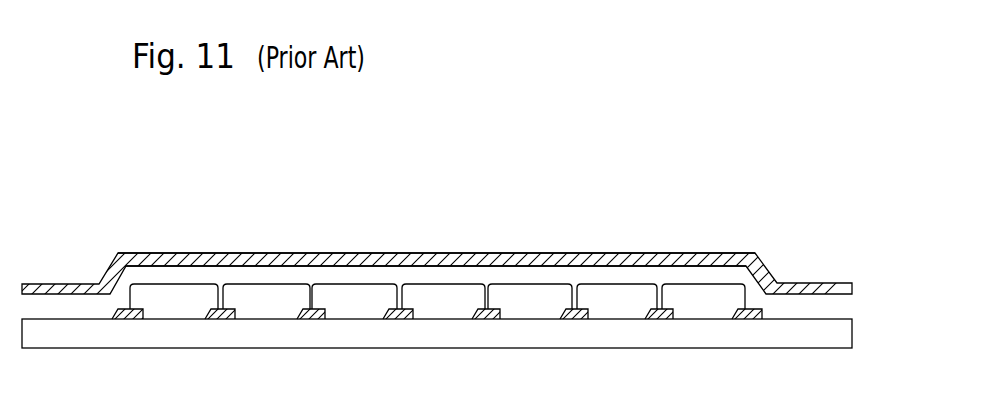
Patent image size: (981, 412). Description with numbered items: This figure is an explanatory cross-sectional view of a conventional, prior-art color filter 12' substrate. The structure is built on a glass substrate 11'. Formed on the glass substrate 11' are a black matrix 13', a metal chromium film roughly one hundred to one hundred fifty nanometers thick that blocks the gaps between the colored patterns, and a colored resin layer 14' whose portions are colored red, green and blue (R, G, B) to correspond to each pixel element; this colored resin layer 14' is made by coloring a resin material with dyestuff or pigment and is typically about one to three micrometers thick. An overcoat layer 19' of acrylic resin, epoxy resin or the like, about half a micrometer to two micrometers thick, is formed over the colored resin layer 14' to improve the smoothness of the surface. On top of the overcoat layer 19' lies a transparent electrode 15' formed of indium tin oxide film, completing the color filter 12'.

The glass substrate 11' is at (437, 358).
The color filter 12' is at (439, 263).
The black matrix 13' is at (440, 349).
The colored resin layer 14' is at (437, 341).
The transparent electrode 15' is at (436, 223).
The overcoat layer 19' is at (436, 233).